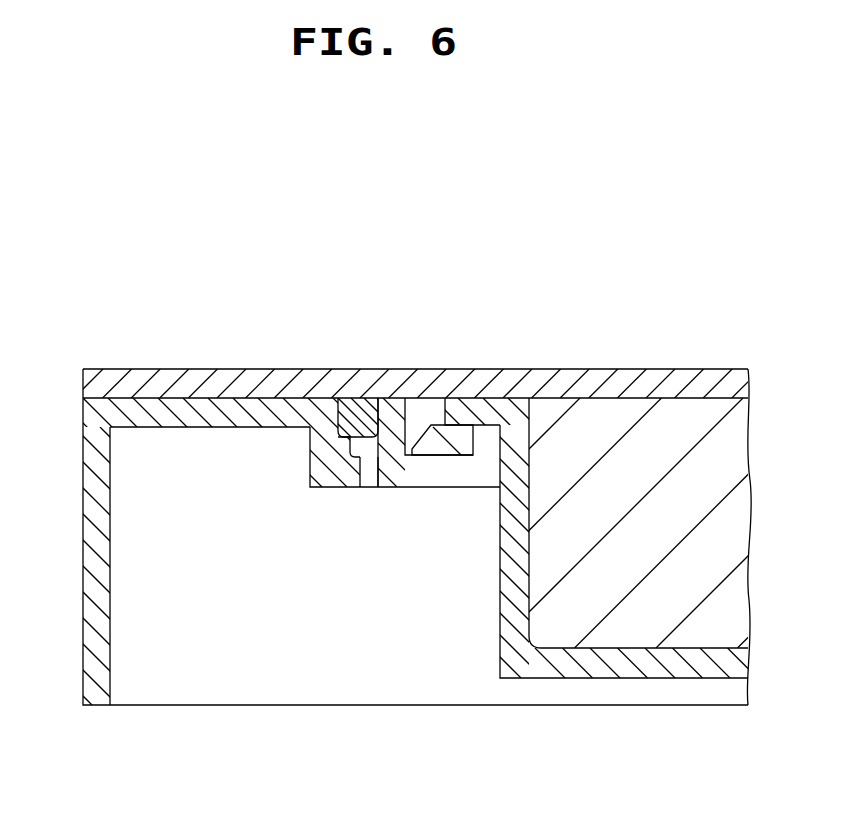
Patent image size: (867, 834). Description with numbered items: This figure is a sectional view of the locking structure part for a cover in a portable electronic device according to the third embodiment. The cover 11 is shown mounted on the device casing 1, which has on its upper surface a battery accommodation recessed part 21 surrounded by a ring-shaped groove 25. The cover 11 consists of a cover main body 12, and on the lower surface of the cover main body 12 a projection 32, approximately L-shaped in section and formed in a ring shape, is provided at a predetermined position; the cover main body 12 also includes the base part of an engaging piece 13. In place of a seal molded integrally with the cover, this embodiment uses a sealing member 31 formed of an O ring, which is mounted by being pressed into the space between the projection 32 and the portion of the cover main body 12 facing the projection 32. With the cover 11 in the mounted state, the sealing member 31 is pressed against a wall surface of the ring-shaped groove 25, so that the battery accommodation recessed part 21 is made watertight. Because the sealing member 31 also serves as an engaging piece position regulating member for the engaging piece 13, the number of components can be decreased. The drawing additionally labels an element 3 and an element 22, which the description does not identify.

The device casing 1 is at (165, 716).
The cover 11 is at (674, 360).
The cover main body 12 is at (205, 375).
The engaging piece 13 is at (398, 474).
The battery accommodation recessed part 21 is at (592, 652).
The block 22 is at (675, 638).
The ring-shaped groove 25 is at (355, 441).
The terminal 3 is at (454, 457).
The sealing member 31 is at (363, 405).
The projection 32 is at (372, 459).